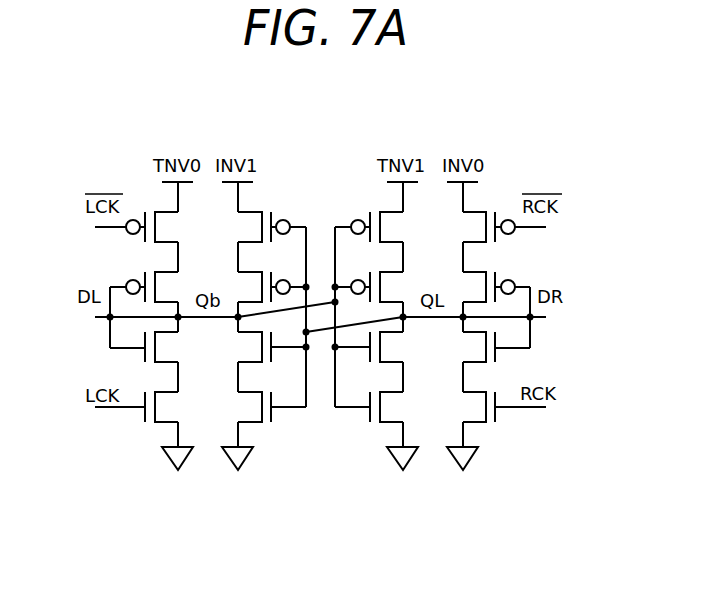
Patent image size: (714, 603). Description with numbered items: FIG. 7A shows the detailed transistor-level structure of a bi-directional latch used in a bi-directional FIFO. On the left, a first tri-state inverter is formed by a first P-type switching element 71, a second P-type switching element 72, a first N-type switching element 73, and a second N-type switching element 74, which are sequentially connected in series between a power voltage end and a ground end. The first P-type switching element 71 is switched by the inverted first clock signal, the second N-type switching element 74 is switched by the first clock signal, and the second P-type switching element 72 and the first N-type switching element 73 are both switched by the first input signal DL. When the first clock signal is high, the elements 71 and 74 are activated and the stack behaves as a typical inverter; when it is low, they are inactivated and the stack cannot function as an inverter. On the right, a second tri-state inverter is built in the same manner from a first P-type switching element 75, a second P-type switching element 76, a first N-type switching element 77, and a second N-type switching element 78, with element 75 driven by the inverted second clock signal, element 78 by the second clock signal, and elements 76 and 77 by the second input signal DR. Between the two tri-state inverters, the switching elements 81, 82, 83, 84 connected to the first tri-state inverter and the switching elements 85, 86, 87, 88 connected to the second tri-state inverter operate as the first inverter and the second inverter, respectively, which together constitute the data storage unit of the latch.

The first P-type switching element 71 is at (160, 210).
The second P-type switching element 72 is at (158, 272).
The first N-type switching element 73 is at (150, 350).
The second N-type switching element 74 is at (155, 418).
The first P-type switching element 75 is at (490, 213).
The second P-type switching element 76 is at (490, 272).
The first N-type switching element 77 is at (492, 352).
The second N-type switching element 78 is at (492, 428).
The switching element 81 is at (262, 210).
The switching element 82 is at (262, 272).
The switching element 83 is at (262, 353).
The switching element 84 is at (262, 420).
The switching element 85 is at (382, 212).
The switching element 86 is at (382, 290).
The switching element 87 is at (387, 350).
The switching element 88 is at (388, 418).